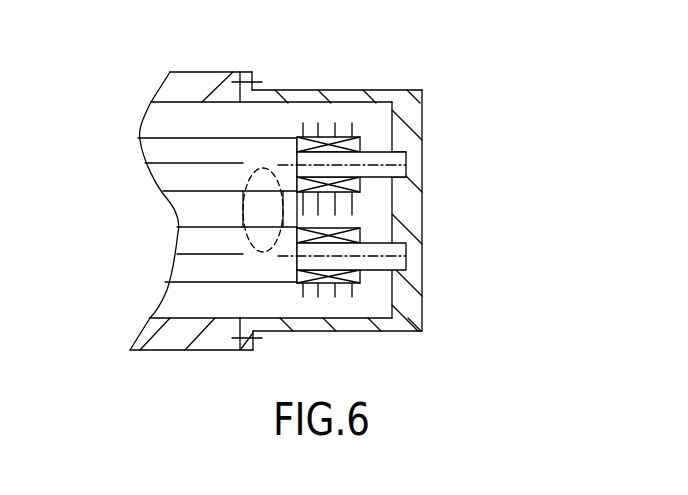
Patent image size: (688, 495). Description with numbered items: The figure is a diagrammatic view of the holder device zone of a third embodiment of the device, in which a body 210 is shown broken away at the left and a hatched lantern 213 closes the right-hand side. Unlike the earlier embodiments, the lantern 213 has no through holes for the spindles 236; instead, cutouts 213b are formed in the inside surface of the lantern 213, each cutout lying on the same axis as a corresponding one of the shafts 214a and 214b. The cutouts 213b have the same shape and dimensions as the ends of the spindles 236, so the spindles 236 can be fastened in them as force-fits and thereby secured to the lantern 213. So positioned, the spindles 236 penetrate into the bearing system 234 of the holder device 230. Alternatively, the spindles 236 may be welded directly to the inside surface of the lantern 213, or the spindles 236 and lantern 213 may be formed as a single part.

The housing body 210 is at (210, 78).
The lantern 213 is at (412, 124).
The cutouts 213b is at (407, 158).
The shaft 214a is at (168, 163).
The shaft 214b is at (193, 258).
The holder device 230 is at (348, 77).
The bearing system 234 is at (360, 139).
The spindles 236 is at (377, 172).